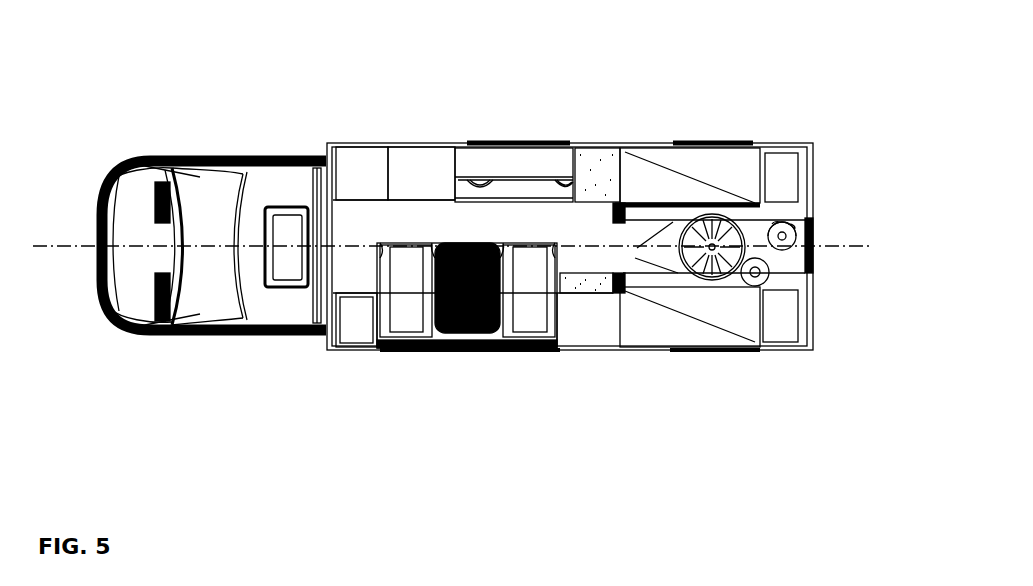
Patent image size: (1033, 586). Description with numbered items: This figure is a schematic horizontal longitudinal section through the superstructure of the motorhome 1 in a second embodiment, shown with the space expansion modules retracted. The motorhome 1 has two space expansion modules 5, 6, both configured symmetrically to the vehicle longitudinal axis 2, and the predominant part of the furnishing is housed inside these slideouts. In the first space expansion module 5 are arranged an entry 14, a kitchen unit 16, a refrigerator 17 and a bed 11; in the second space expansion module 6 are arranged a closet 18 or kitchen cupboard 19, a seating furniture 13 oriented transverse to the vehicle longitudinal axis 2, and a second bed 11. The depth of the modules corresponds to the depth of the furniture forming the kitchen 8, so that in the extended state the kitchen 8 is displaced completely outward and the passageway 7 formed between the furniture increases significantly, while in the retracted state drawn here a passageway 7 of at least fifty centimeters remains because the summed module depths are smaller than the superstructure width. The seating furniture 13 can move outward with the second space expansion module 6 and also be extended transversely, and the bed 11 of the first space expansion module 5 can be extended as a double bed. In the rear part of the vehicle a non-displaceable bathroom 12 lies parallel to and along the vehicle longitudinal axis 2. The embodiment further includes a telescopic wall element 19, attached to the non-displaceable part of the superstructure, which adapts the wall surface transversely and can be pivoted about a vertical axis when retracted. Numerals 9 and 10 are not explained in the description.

The motorhome 1 is at (748, 101).
The vehicle longitudinal axis 2 is at (68, 243).
The first space expansion module 5 is at (495, 143).
The second space expansion module 6 is at (470, 348).
The passageway 7 is at (380, 228).
The kitchen 8 is at (556, 170).
The seat base 9 is at (540, 345).
The entrance step 10 is at (612, 327).
The bed 11 is at (722, 280).
The bathroom 12 is at (585, 336).
The seating furniture 13 is at (368, 327).
The entry 14 is at (450, 143).
The kitchen unit 16 is at (580, 182).
The refrigerator 17 is at (360, 168).
The closet 18 is at (718, 143).
The kitchen cupboard 19 is at (627, 290).